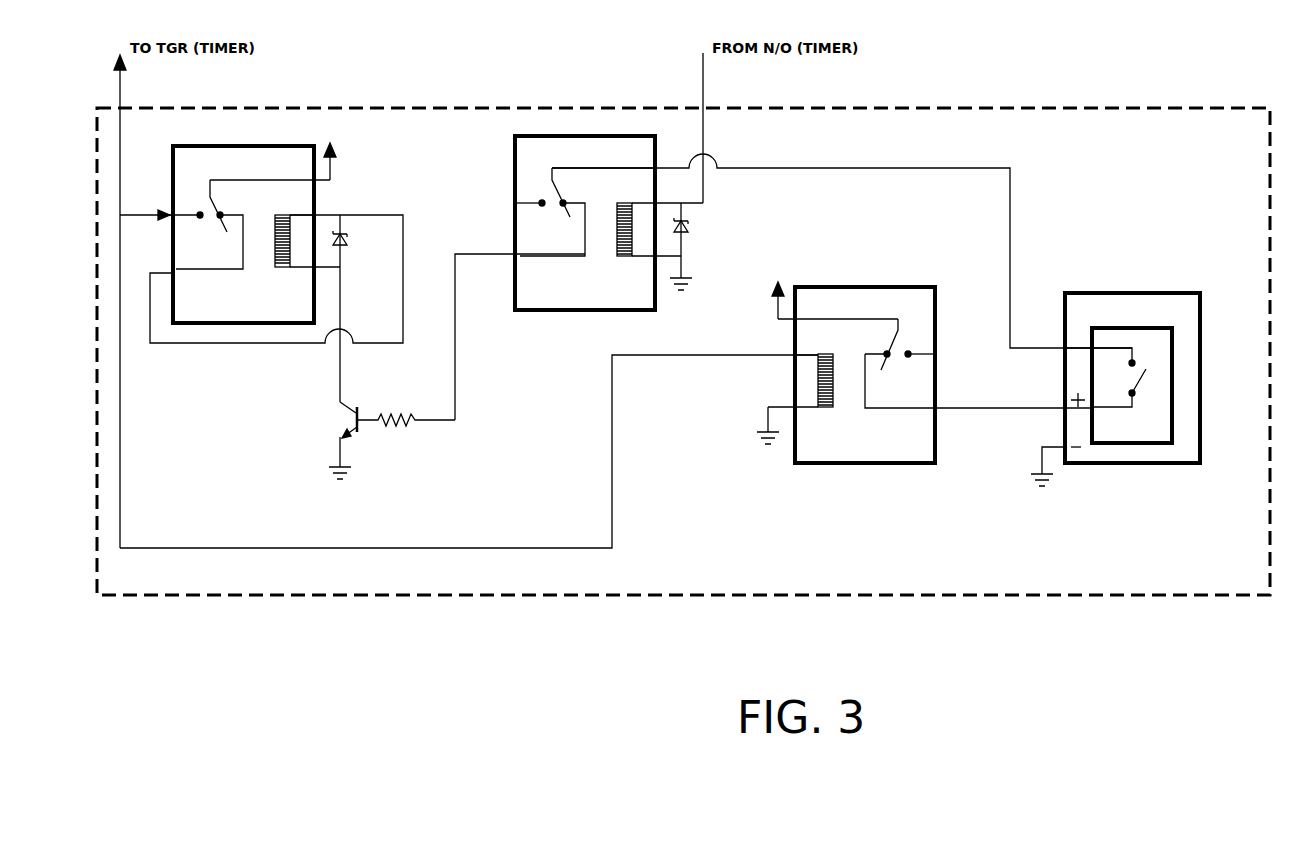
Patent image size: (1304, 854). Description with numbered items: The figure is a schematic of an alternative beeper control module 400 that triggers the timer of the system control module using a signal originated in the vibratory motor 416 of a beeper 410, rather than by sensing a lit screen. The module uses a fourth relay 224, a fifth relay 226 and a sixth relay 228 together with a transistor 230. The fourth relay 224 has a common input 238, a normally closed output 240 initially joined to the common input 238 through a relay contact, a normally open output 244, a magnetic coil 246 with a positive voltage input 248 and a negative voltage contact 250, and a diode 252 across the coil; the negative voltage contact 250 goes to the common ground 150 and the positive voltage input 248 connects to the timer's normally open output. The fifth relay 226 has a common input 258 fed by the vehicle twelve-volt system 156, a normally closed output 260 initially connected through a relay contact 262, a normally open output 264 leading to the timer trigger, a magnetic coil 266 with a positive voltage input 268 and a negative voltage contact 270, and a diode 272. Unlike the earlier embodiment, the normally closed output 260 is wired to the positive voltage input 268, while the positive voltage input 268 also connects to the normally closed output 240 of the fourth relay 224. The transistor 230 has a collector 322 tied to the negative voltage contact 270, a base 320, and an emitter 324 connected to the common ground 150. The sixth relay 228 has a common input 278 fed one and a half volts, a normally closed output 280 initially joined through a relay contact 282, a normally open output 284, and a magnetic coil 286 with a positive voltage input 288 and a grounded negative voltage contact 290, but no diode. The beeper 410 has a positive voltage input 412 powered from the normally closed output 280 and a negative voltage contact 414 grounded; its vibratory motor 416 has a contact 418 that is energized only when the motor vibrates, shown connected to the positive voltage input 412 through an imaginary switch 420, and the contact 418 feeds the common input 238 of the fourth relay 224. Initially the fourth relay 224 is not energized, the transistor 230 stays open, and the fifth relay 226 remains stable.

The beeper control module 400 is at (1062, 108).
The fifth relay 226 is at (272, 146).
The common (COM) input 258 is at (275, 178).
The normally open (N/O) output 264 is at (190, 205).
The relay contact 262 is at (223, 228).
The normally closed (N/C) output 260 is at (217, 270).
The magnetic coil 266 is at (276, 258).
The positive voltage (+) input 268 is at (300, 212).
The negative voltage (−) contact 270 is at (304, 276).
The vehicle 12 V voltage system 156 is at (332, 166).
The diode 272 is at (347, 240).
The transistor 230 is at (329, 420).
The collector 322 is at (350, 402).
The base 320 is at (372, 418).
The emitter 324 is at (350, 421).
The common ground 150 is at (336, 473).
The fourth relay 224 is at (612, 136).
The common (COM) input 238 is at (612, 163).
The normally open (N/O) output 244 is at (530, 196).
The normally closed (N/C) output 240 is at (559, 257).
The magnetic coil 246 is at (618, 246).
The positive voltage (+) input 248 is at (642, 200).
The negative voltage (−) contact 250 is at (648, 268).
The diode 252 is at (687, 232).
The sixth relay 228 is at (900, 287).
The common (COM) input 278 is at (840, 314).
The normally open (N/O) output 284 is at (914, 345).
The relay contact 282 is at (884, 368).
The normally closed (N/C) output 280 is at (895, 411).
The magnetic coil 286 is at (836, 398).
The positive voltage (+) input 288 is at (808, 350).
The negative voltage (−) contact 290 is at (812, 418).
The beeper 410 is at (1183, 293).
The vibratory motor 416 is at (1165, 328).
The contact (C) 418 is at (1092, 345).
The imaginary switch 420 is at (1143, 382).
The positive voltage (+) input 412 is at (1082, 412).
The negative voltage (−) contact 414 is at (1078, 455).